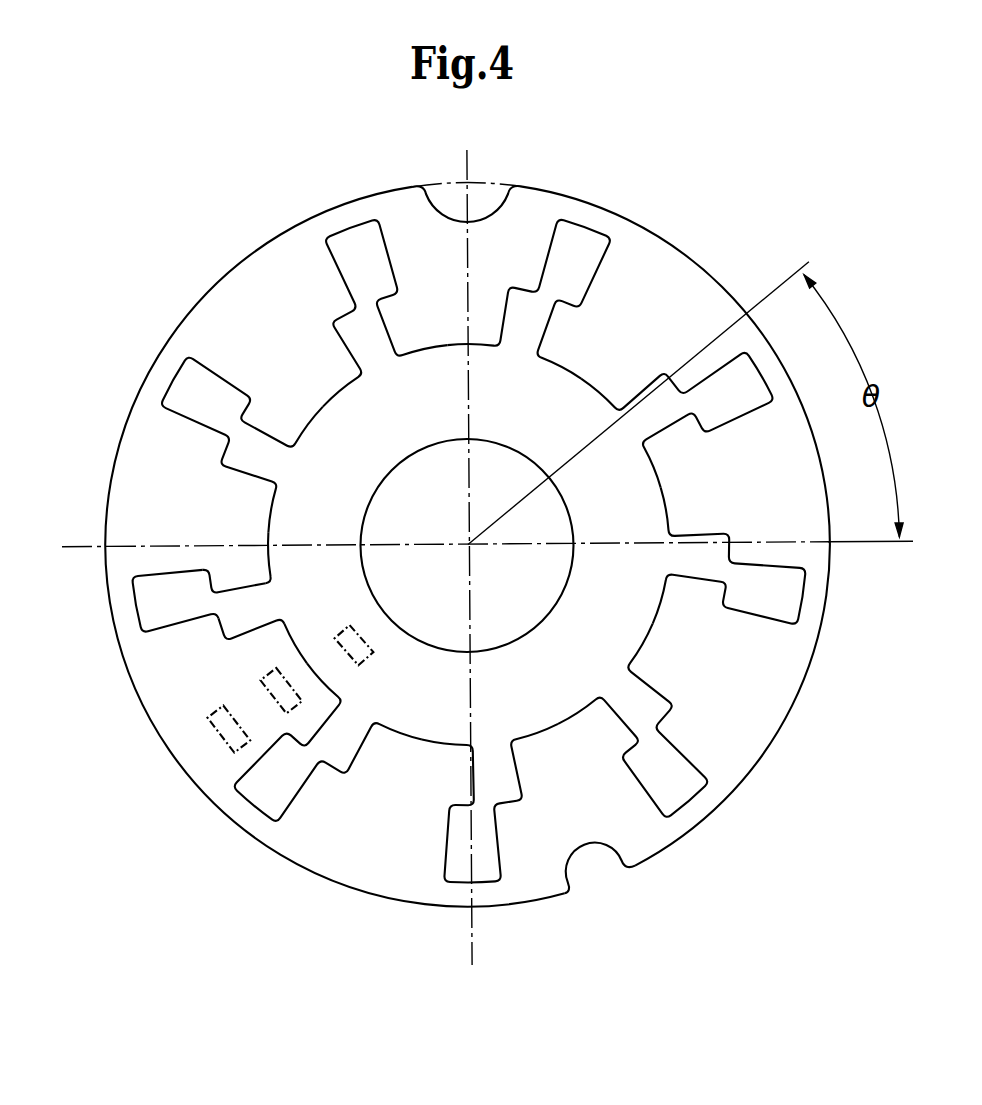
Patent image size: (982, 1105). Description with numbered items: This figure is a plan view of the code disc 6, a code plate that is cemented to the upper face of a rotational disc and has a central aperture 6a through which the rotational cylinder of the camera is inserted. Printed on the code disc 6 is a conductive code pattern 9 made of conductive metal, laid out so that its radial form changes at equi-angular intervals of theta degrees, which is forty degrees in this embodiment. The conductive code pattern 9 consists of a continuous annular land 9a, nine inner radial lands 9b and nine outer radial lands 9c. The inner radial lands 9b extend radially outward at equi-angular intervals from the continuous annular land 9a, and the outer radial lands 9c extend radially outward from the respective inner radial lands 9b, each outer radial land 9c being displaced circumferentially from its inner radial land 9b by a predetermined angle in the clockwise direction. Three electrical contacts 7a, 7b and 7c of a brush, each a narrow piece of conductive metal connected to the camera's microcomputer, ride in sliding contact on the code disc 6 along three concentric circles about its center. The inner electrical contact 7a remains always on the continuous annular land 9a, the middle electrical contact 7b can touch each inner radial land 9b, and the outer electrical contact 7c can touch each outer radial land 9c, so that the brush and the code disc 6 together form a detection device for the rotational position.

The code disc 6 is at (258, 248).
The central aperture 6a is at (420, 450).
The conductive code pattern 9 is at (183, 387).
The continuous annular land 9a is at (293, 508).
The inner radial lands 9b is at (243, 608).
The outer radial lands 9c is at (140, 605).
The inner electrical contact 7a is at (346, 626).
The middle electrical contact 7b is at (262, 683).
The outer electrical contact 7c is at (207, 715).